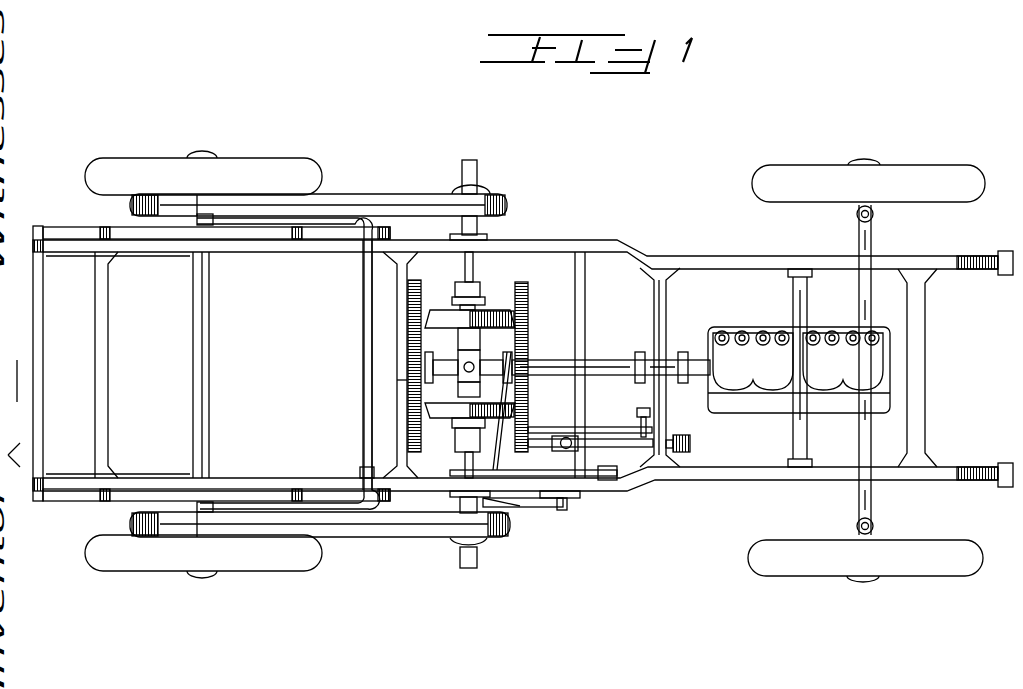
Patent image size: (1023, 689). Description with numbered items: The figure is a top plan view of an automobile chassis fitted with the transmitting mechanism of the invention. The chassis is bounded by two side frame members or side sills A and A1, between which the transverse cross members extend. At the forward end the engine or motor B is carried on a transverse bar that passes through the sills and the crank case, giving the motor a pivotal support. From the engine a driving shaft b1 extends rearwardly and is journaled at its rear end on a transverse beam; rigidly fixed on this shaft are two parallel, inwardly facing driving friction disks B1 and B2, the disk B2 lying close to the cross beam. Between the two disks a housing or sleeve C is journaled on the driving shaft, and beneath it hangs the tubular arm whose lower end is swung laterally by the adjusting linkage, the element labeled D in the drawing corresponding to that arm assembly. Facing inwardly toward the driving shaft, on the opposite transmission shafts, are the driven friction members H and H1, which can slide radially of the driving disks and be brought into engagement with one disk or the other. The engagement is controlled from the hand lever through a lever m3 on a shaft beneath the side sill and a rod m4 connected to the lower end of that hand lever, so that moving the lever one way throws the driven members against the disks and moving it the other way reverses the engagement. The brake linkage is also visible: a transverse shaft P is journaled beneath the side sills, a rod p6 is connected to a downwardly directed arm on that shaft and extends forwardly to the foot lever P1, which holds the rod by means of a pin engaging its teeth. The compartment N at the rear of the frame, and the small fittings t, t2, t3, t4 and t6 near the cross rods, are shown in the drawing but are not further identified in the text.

The side frame member A is at (566, 246).
The side frame member A1 is at (618, 485).
The engine B is at (752, 328).
The driving friction disk B1 is at (530, 322).
The driving friction disk B2 is at (421, 290).
The housing or sleeve C is at (500, 372).
The lower bevel gear D is at (480, 392).
The driven friction member H is at (490, 310).
The driven friction member H1 is at (457, 432).
The rear frame compartment N is at (215, 352).
The transverse shaft P is at (370, 322).
The foot lever P1 is at (604, 482).
The driving shaft b1 is at (608, 360).
The rod pin t is at (790, 436).
The bracket t2 is at (392, 363).
The bracket t3 is at (643, 462).
The rod t4 is at (600, 428).
The bolt t6 is at (651, 424).
The brake rod p6 is at (363, 466).
The lever m3 is at (510, 512).
The rod m4 is at (562, 510).